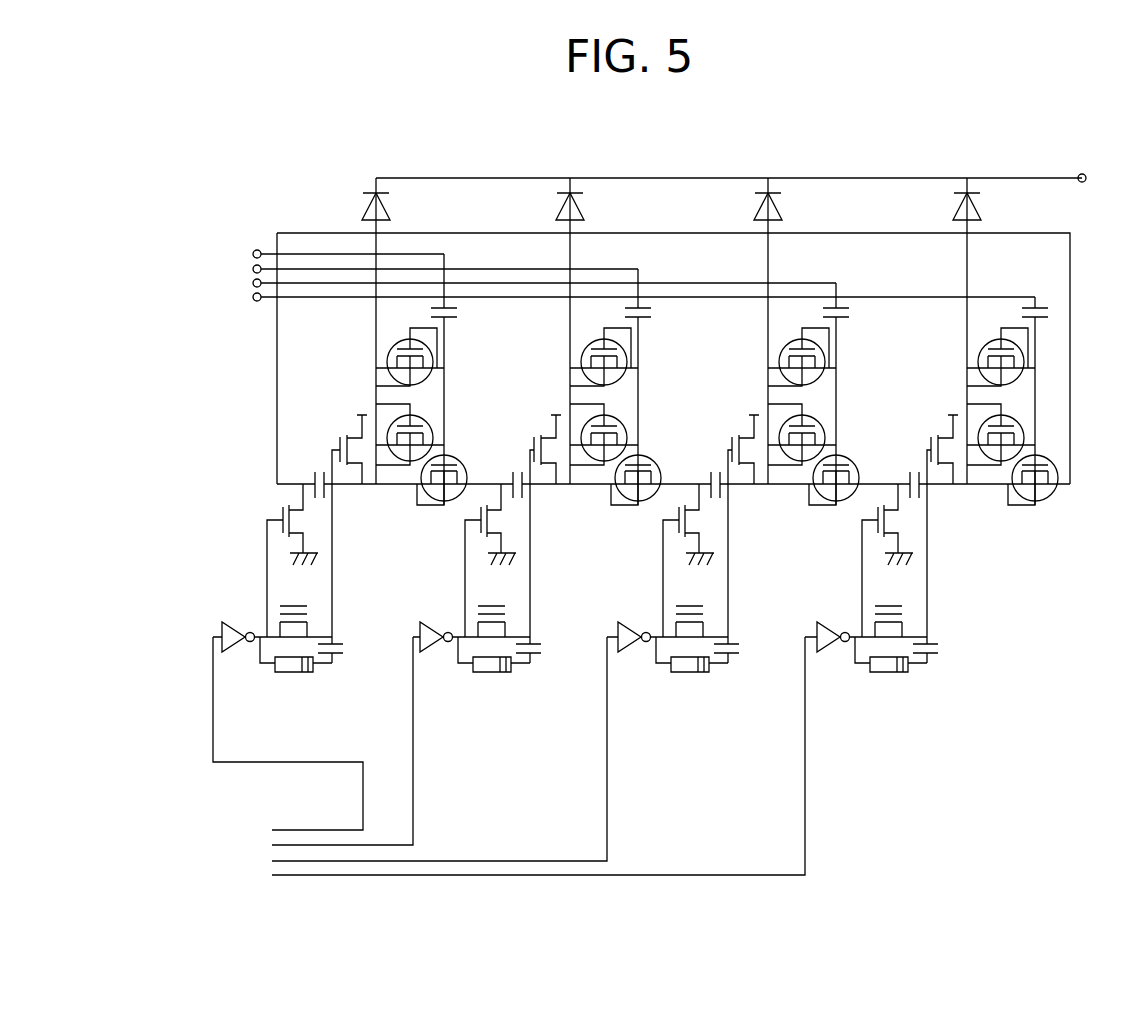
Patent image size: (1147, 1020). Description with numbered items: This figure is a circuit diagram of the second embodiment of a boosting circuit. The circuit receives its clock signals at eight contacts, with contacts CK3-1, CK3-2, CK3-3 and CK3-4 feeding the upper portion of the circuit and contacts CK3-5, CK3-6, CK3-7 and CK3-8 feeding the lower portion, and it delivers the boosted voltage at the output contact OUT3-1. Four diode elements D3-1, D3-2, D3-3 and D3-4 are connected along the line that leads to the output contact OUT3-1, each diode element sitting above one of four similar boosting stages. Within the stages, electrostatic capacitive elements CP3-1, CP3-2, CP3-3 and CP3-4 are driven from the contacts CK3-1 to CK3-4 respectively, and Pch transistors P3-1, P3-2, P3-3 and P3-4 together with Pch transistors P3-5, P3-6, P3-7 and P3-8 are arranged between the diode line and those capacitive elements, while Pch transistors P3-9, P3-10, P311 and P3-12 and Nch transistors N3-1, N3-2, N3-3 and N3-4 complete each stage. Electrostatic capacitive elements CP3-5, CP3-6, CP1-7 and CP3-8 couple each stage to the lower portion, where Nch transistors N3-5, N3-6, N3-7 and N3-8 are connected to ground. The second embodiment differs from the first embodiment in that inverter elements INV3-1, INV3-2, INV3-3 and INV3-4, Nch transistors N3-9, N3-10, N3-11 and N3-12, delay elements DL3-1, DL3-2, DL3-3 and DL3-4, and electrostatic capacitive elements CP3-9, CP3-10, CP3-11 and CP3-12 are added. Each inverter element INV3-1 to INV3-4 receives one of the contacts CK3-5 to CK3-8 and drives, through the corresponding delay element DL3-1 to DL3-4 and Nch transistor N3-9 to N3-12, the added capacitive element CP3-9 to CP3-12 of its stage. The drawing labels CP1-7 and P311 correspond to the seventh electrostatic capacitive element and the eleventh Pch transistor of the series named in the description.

The diode element D3-1 is at (355, 200).
The diode element D3-2 is at (549, 200).
The diode element D3-3 is at (747, 200).
The diode element D3-4 is at (946, 200).
The output contact OUT3-1 is at (1082, 174).
The contact CK3-1 is at (253, 254).
The contact CK3-2 is at (253, 269).
The contact CK3-3 is at (253, 283).
The contact CK3-4 is at (253, 298).
The contact CK3-5 is at (272, 830).
The contact CK3-6 is at (272, 845).
The contact CK3-7 is at (272, 861).
The contact CK3-8 is at (272, 876).
The electrostatic capacitive element CP3-1 is at (431, 312).
The electrostatic capacitive element CP3-2 is at (625, 312).
The electrostatic capacitive element CP3-3 is at (823, 312).
The electrostatic capacitive element CP3-4 is at (1022, 312).
The electrostatic capacitive element CP3-5 is at (327, 497).
The electrostatic capacitive element CP3-6 is at (525, 497).
The electrostatic capacitive element CP1-7 is at (723, 497).
The electrostatic capacitive element CP3-8 is at (922, 497).
The electrostatic capacitive element CP3-9 is at (344, 655).
The electrostatic capacitive element CP3-10 is at (542, 655).
The electrostatic capacitive element CP3-11 is at (740, 655).
The electrostatic capacitive element CP3-12 is at (941, 655).
The Pch transistor P3-1 is at (389, 356).
The Pch transistor P3-2 is at (583, 356).
The Pch transistor P3-3 is at (781, 356).
The Pch transistor P3-4 is at (980, 356).
The Pch transistor P3-5 is at (392, 422).
The Pch transistor P3-6 is at (586, 422).
The Pch transistor P3-7 is at (784, 422).
The Pch transistor P3-8 is at (983, 422).
The Pch transistor P3-9 is at (472, 450).
The Pch transistor P3-10 is at (666, 450).
The Pch transistor P311 is at (844, 462).
The Pch transistor P3-12 is at (1040, 500).
The Nch transistor N3-1 is at (340, 440).
The Nch transistor N3-2 is at (534, 440).
The Nch transistor N3-3 is at (732, 440).
The Nch transistor N3-4 is at (931, 440).
The Nch transistor N3-5 is at (283, 536).
The Nch transistor N3-6 is at (481, 536).
The Nch transistor N3-7 is at (679, 536).
The Nch transistor N3-8 is at (878, 536).
The Nch transistor N3-9 is at (280, 612).
The Nch transistor N3-10 is at (478, 612).
The Nch transistor N3-11 is at (676, 612).
The Nch transistor N3-12 is at (875, 612).
The delay element DL3-1 is at (290, 672).
The delay element DL3-2 is at (488, 672).
The delay element DL3-3 is at (686, 672).
The delay element DL3-4 is at (885, 672).
The inverter element INV3-1 is at (234, 646).
The inverter element INV3-2 is at (432, 646).
The inverter element INV3-3 is at (630, 646).
The inverter element INV3-4 is at (829, 646).